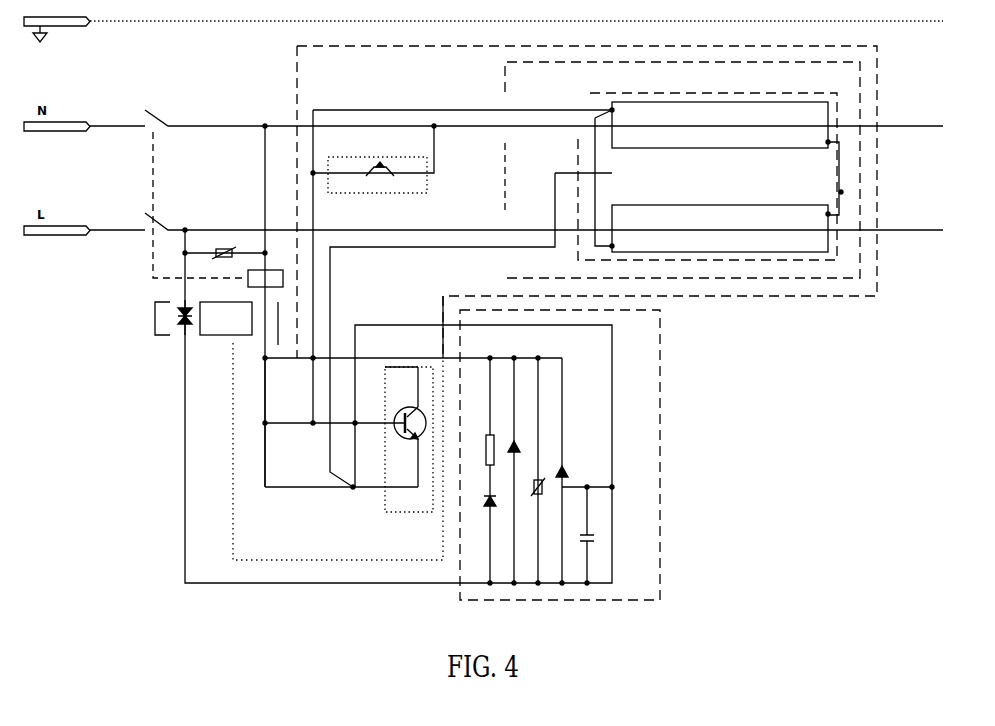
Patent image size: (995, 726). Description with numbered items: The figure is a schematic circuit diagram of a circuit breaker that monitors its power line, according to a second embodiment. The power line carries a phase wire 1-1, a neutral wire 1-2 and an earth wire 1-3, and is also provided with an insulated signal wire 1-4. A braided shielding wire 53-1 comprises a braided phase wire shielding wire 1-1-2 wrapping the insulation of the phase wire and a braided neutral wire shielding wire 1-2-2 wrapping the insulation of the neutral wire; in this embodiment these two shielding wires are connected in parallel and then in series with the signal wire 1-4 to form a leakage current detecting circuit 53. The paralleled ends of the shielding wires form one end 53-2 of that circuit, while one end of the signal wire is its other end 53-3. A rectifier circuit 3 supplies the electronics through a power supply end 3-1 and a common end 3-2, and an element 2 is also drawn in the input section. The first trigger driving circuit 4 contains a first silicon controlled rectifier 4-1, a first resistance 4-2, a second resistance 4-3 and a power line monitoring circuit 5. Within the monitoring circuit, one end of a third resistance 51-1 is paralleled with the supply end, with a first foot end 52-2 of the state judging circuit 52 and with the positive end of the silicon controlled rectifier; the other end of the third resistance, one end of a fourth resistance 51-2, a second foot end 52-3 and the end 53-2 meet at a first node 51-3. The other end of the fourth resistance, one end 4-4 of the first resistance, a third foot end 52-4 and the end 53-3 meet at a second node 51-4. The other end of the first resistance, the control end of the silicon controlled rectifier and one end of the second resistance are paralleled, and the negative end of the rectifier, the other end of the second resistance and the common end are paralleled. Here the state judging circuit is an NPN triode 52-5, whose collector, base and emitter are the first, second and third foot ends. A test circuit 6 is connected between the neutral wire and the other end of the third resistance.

The phase wire 1-1 is at (235, 229).
The neutral wire 1-2 is at (233, 127).
The earth wire 1-3 is at (233, 23).
The signal wire 1-4 is at (563, 172).
The phase wire shielding wire 1-1-2 is at (702, 200).
The neutral wire shielding wire 1-2-2 is at (738, 152).
The fuse unit 2 is at (271, 277).
The rectifier circuit 3 is at (160, 318).
The power supply end of the rectifier circuit 3-1 is at (265, 333).
The common end of the rectifier circuit 3-2 is at (183, 338).
The first trigger driving circuit 4 is at (643, 462).
The first silicon controlled rectifier 4-1 is at (564, 470).
The first resistance 4-2 is at (612, 375).
The second resistance 4-3 is at (598, 537).
The one end of the first resistance 4-4 is at (457, 322).
The power line monitoring circuit 5 is at (242, 543).
The third resistance 51-1 is at (267, 372).
The fourth resistance 51-2 is at (267, 440).
The first node 51-3 is at (267, 424).
The second node 51-4 is at (353, 489).
The state judging circuit 52 is at (420, 503).
The first foot end 52-2 is at (418, 364).
The second foot end 52-3 is at (403, 437).
The third foot end 52-4 is at (412, 492).
The NPN triode 52-5 is at (411, 407).
The leakage current detecting circuit 53 is at (513, 190).
The braided shielding wire 53-1 is at (588, 103).
The one end of the leakage current detecting circuit 53-2 is at (505, 108).
The other end of the leakage current detecting circuit 53-3 is at (505, 247).
The test circuit 6 is at (412, 180).